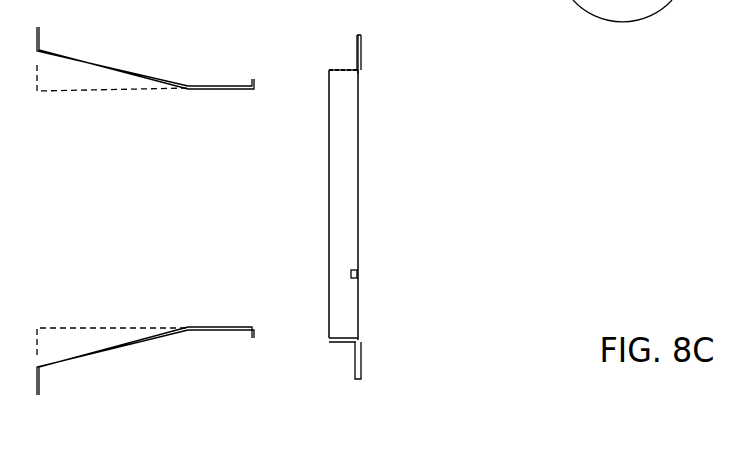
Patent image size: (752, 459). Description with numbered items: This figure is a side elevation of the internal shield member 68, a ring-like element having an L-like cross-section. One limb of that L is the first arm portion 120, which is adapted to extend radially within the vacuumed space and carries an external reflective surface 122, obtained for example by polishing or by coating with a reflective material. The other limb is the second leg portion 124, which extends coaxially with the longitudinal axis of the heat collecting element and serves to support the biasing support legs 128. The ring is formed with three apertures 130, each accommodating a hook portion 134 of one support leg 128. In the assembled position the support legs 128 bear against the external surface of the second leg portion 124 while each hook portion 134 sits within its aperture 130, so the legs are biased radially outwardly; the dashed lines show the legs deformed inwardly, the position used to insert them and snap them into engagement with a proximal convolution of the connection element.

The internal shield member 68 is at (418, 179).
The first arm portion 120 is at (355, 50).
The external reflective surface 122 is at (360, 45).
The second leg portion 124 is at (337, 68).
The support leg 128 is at (94, 62).
The aperture 130 is at (360, 70).
The hook portion 134 is at (250, 83).